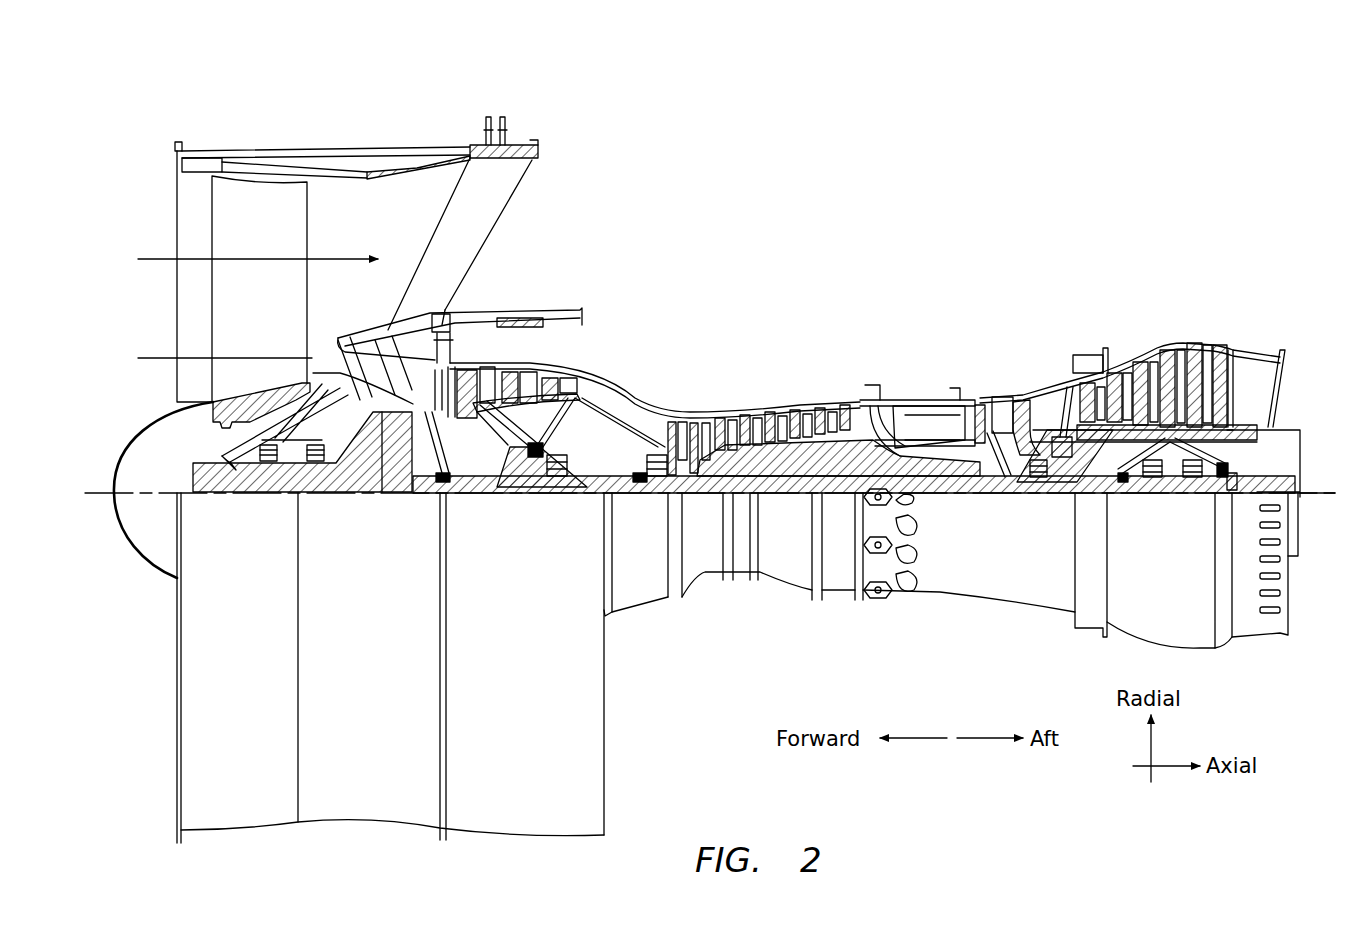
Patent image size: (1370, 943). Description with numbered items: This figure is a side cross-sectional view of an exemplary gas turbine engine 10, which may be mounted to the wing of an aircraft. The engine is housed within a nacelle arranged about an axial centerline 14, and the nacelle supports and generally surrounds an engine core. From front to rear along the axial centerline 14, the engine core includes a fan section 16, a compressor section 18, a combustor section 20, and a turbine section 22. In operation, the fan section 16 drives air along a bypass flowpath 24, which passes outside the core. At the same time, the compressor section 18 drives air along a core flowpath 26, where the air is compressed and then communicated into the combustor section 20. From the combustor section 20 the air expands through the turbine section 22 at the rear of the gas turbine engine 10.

The gas turbine engine 10 is at (1040, 204).
The axial centerline 14 is at (1322, 490).
The fan section 16 is at (440, 128).
The compressor section 18 is at (450, 272).
The combustor section 20 is at (983, 272).
The turbine section 22 is at (1225, 272).
The bypass flowpath 24 is at (150, 255).
The core flowpath 26 is at (150, 357).